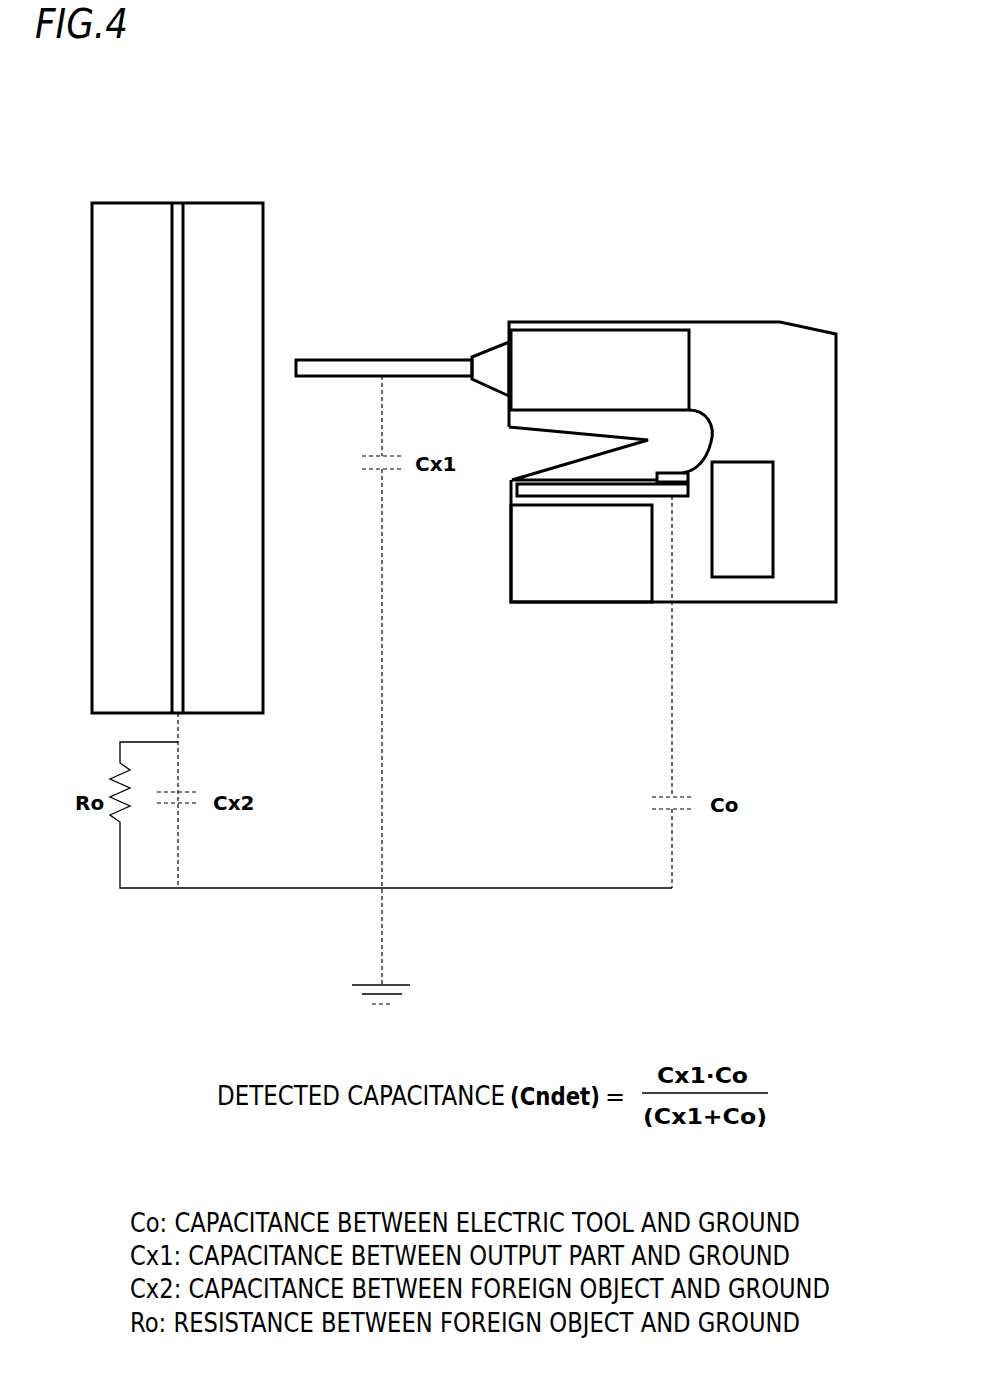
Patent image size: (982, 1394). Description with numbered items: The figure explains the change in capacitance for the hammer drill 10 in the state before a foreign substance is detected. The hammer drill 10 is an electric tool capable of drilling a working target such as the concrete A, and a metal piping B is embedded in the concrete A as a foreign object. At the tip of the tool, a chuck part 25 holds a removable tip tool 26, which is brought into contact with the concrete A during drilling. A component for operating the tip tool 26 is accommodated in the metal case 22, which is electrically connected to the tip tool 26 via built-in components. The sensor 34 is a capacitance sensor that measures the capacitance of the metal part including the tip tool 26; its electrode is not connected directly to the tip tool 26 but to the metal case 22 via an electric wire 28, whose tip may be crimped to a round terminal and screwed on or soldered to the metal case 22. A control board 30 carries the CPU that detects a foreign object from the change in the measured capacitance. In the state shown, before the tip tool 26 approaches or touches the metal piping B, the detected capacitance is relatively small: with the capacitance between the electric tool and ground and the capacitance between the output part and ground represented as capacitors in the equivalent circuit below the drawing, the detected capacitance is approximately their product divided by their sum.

The hammer drill 10 is at (678, 272).
The metal case 22 is at (597, 328).
The chuck part 25 is at (488, 348).
The tip tool 26 is at (415, 360).
The electric wire 28 is at (707, 423).
The control board 30 is at (553, 497).
The sensor 34 is at (673, 473).
The concrete A is at (264, 228).
The metal piping B is at (183, 229).